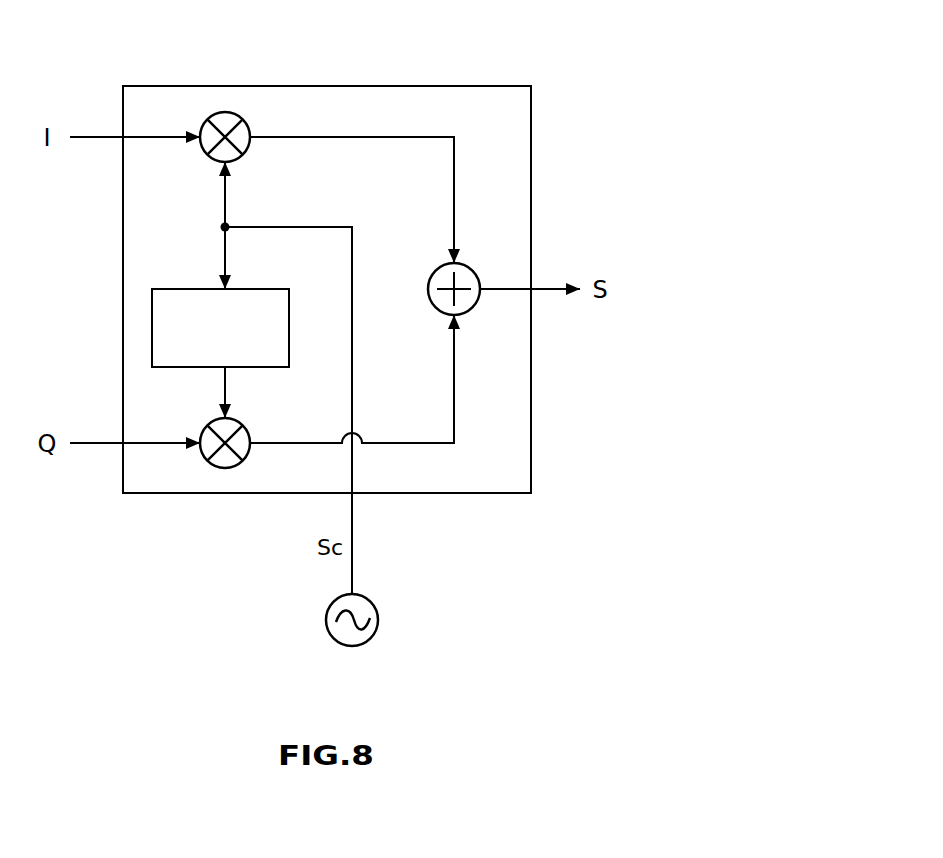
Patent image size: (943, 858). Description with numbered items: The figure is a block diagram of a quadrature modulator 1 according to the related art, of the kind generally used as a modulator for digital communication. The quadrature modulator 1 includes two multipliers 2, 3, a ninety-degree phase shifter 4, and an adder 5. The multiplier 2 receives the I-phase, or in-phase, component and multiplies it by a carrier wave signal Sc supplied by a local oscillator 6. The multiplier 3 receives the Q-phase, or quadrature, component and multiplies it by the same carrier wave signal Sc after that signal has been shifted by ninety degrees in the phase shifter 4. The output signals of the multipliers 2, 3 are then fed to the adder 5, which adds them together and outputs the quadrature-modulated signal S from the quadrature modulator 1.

The quadrature modulator 1 is at (435, 85).
The multiplier 2 is at (247, 125).
The multiplier 3 is at (247, 430).
The 90-degree phase shifter 4 is at (253, 288).
The adder 5 is at (474, 272).
The local oscillator 6 is at (375, 603).